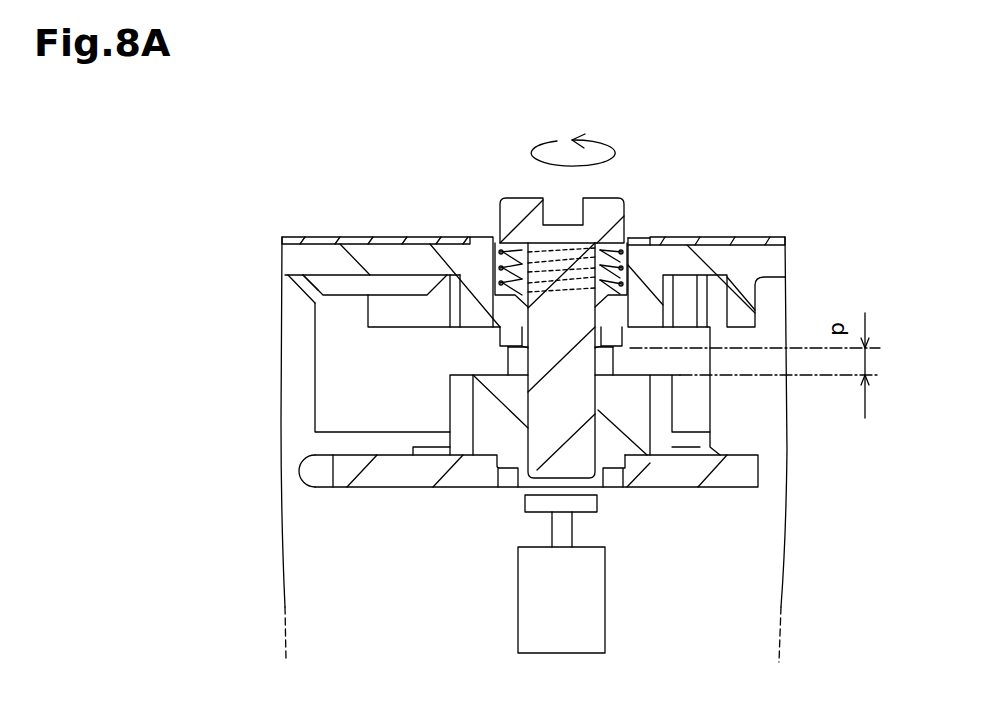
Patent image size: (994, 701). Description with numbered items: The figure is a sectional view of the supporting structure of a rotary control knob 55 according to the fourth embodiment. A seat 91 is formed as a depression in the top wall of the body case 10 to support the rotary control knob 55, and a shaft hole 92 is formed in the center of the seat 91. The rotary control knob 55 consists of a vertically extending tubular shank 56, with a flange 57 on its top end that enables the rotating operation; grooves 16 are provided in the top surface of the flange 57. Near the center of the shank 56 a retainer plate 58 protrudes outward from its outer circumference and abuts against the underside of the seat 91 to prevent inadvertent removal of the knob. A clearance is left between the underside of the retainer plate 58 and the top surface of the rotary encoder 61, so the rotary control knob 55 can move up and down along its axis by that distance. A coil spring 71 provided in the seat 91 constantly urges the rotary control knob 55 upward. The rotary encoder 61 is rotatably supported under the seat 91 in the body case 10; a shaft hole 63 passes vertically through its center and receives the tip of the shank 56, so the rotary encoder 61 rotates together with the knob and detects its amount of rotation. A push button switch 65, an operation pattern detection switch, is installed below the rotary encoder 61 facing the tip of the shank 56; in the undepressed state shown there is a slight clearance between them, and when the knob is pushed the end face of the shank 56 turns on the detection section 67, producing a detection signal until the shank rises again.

The body case 10 is at (344, 205).
The rotary control knob 55 is at (483, 216).
The grooves 16 is at (578, 222).
The flange 57 is at (627, 224).
The coil spring 71 is at (634, 278).
The shaft hole 92 is at (598, 322).
The seat 91 is at (494, 264).
The shaft hole 63 is at (592, 388).
The retainer plate 58 is at (500, 332).
The tubular shank 56 is at (543, 427).
The detection section 67 is at (532, 500).
The rotary encoder 61 is at (640, 423).
The push button switch 65 is at (620, 607).